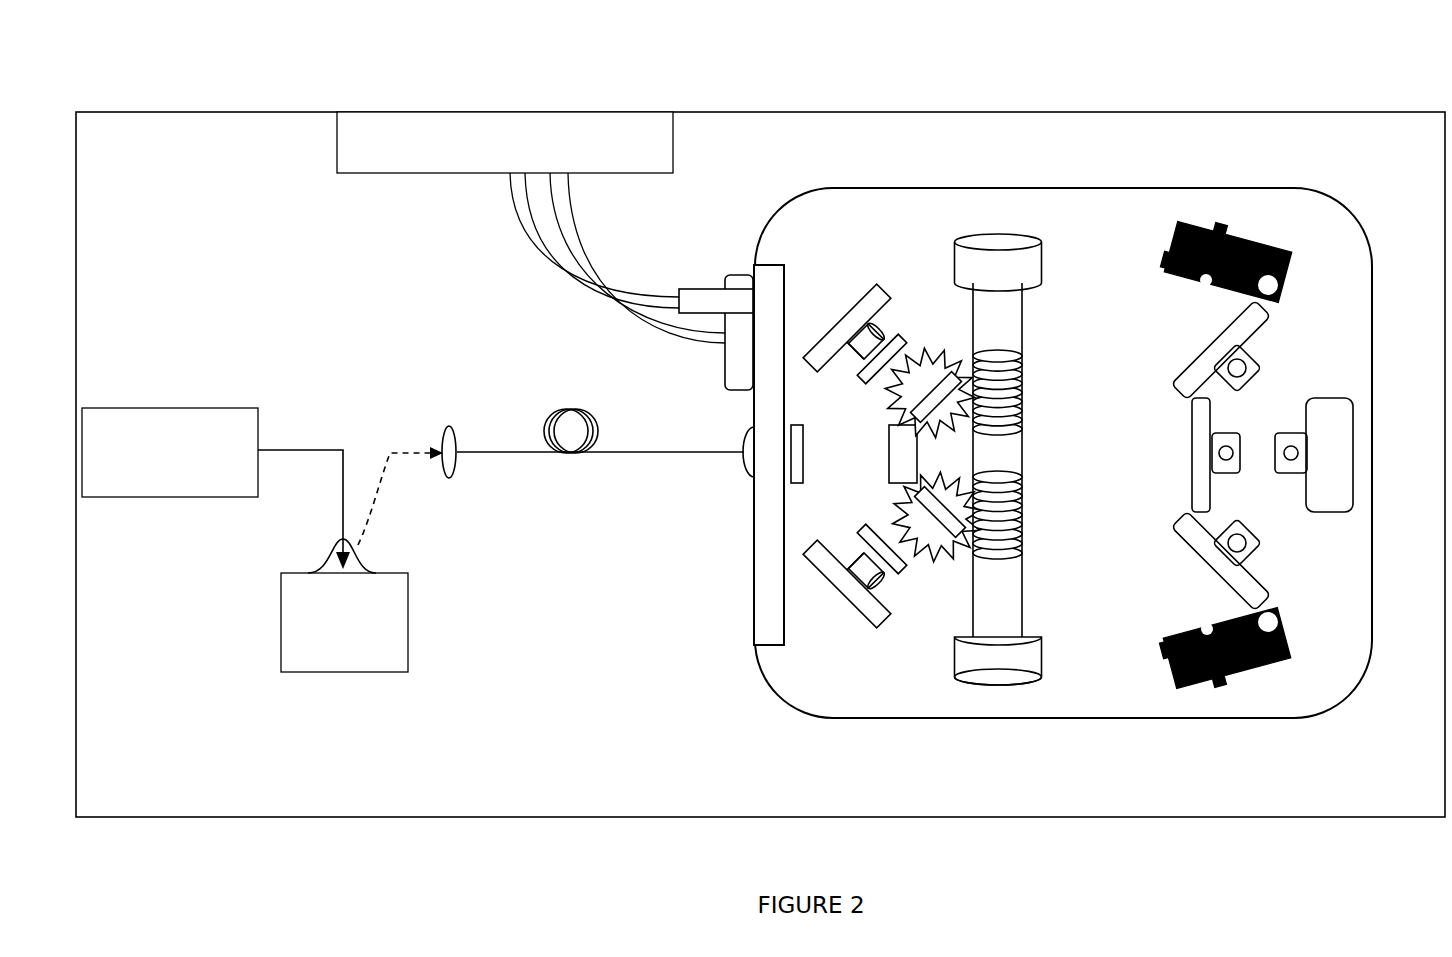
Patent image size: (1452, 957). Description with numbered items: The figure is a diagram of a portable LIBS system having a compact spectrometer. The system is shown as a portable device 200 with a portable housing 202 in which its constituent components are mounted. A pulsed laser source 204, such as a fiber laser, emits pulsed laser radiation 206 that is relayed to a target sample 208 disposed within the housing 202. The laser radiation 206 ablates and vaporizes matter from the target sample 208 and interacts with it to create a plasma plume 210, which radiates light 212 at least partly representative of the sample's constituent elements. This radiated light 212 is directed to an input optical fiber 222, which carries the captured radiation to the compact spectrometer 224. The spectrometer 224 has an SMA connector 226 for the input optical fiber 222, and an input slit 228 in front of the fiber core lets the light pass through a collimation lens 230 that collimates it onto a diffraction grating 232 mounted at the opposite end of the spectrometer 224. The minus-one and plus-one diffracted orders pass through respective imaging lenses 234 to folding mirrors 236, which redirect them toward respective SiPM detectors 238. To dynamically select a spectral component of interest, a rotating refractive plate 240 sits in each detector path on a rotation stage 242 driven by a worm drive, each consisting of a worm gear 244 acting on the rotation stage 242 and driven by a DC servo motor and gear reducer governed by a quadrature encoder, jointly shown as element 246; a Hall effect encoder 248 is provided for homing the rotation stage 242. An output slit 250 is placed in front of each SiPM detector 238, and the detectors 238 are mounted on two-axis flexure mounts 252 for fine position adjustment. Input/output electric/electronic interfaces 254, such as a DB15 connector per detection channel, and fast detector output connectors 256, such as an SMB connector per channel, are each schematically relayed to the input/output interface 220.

The portable device 200 is at (1068, 78).
The portable housing 202 is at (802, 112).
The pulsed laser source 204 is at (107, 407).
The pulsed laser radiation 206 is at (317, 450).
The target sample 208 is at (305, 672).
The plasma plume 210 is at (365, 555).
The radiated light 212 is at (402, 450).
The input/output interface 220 is at (478, 112).
The input optical fiber 222 is at (498, 452).
The compact spectrometer 224 is at (1357, 228).
The SMA connector 226 is at (744, 455).
The input slit 228 is at (802, 433).
The collimation lens 230 is at (1200, 482).
The diffraction grating 232 is at (1333, 445).
The imaging lens 234 is at (1215, 558).
The folding mirror 236 is at (1168, 645).
The SiPM detector 238 is at (857, 340).
The rotating refractive plate 240 is at (944, 370).
The rotation stage 242 is at (900, 518).
The worm gear 244 is at (1023, 415).
The DC servo motor and gear reducer with quadrature encoder 246 is at (960, 263).
The Hall effect encoder 248 is at (900, 457).
The output slit 250 is at (903, 343).
The two-axis flexure mount 252 is at (850, 587).
The input/output electric/electronic interface 254 is at (721, 357).
The fast output detector output connector 256 is at (693, 288).